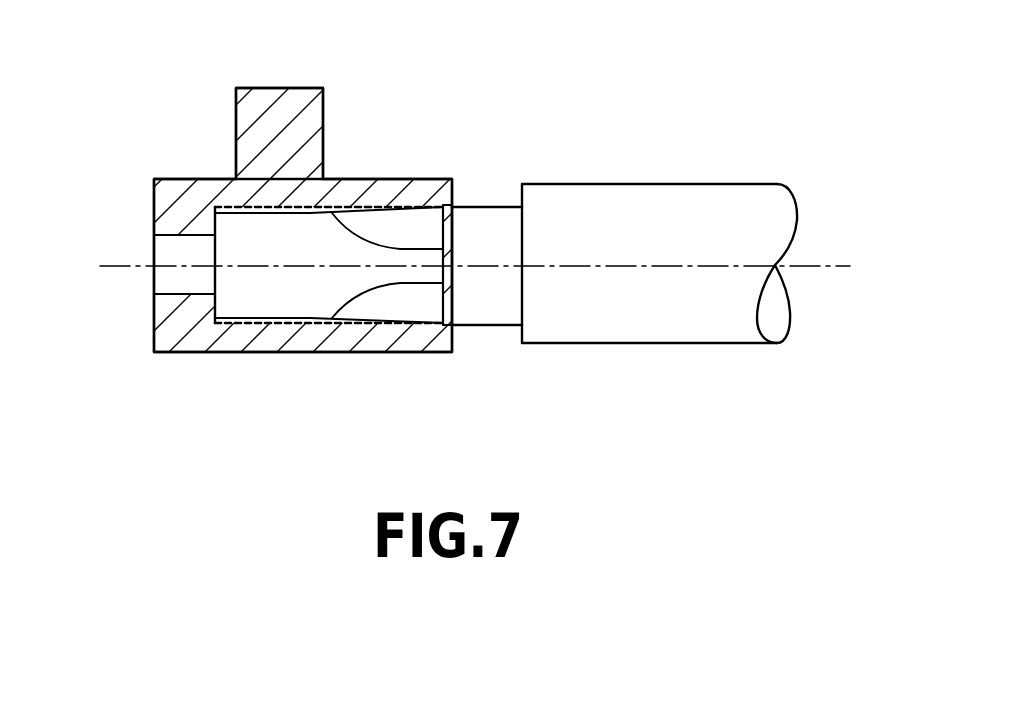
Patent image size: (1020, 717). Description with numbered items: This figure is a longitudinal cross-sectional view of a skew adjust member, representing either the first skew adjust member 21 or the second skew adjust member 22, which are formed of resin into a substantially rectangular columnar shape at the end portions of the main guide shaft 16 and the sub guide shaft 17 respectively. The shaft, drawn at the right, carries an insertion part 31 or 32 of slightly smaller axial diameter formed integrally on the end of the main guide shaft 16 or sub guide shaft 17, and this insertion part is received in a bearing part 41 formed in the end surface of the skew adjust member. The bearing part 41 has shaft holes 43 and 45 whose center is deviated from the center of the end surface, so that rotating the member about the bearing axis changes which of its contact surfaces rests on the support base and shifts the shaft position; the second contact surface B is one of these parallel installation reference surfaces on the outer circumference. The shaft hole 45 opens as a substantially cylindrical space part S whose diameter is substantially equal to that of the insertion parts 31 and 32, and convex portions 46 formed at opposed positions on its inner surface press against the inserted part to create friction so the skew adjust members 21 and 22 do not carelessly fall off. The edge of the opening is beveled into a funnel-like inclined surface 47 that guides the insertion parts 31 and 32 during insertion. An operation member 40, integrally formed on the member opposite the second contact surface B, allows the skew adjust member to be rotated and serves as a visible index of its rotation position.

The operation member 40 is at (274, 88).
The first skew adjust member 21 is at (315, 216).
The second skew adjust member 22 is at (460, 114).
The insertion part 31 is at (531, 210).
The insertion part 32 is at (510, 235).
The main guide shaft 16 is at (664, 219).
The sub guide shaft 17 is at (720, 205).
The bearing part 41 is at (175, 321).
The shaft hole 43 is at (178, 293).
The shaft hole 45 is at (429, 325).
The convex portion 46 is at (443, 249).
The inclined surface 47 is at (455, 327).
The space part S is at (410, 234).
The second contact surface B is at (292, 353).